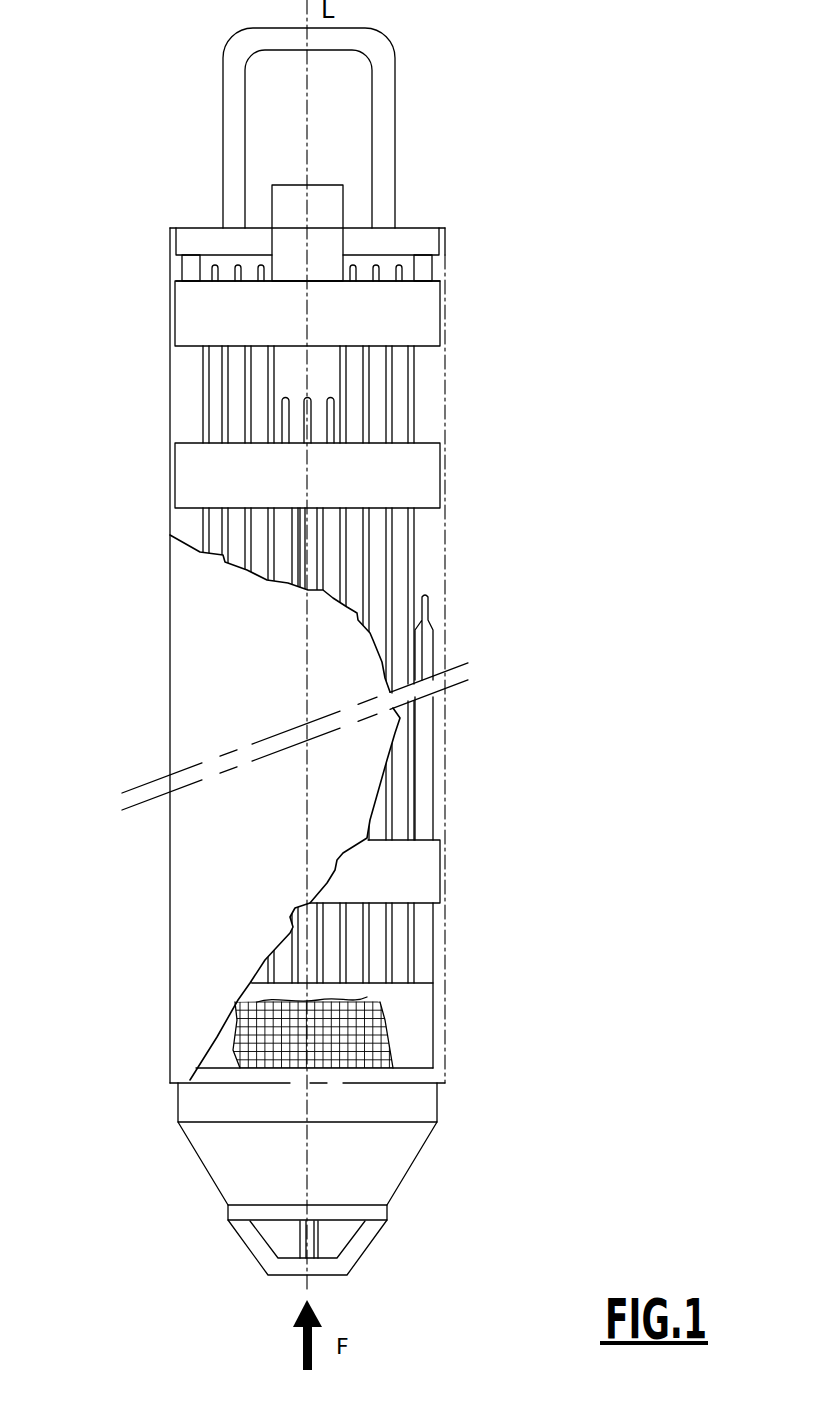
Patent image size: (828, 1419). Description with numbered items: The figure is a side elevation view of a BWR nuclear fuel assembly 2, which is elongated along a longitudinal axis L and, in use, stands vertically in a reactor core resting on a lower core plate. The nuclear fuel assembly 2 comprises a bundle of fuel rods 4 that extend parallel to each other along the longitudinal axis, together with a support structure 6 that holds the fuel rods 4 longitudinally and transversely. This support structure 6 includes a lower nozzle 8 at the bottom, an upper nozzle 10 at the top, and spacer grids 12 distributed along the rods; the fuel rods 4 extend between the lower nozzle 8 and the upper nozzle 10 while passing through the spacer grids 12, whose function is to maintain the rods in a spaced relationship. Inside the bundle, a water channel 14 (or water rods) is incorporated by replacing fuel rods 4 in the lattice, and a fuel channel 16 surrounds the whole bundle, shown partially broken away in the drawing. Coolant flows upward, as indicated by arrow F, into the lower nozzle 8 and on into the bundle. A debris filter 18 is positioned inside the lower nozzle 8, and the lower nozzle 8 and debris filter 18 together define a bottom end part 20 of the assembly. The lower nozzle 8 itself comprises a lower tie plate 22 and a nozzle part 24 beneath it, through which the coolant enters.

The nuclear fuel assembly 2 is at (72, 196).
The fuel rods 4 is at (377, 417).
The support structure 6 is at (496, 608).
The lower nozzle 8 is at (486, 1066).
The upper nozzle 10 is at (417, 313).
The spacer grids 12 is at (417, 479).
The water channel 14 is at (328, 380).
The fuel channel 16 is at (192, 652).
The debris filter 18 is at (377, 1045).
The bottom end part 20 is at (592, 1023).
The lower tie plate 22 is at (367, 997).
The nozzle part 24 is at (375, 1175).